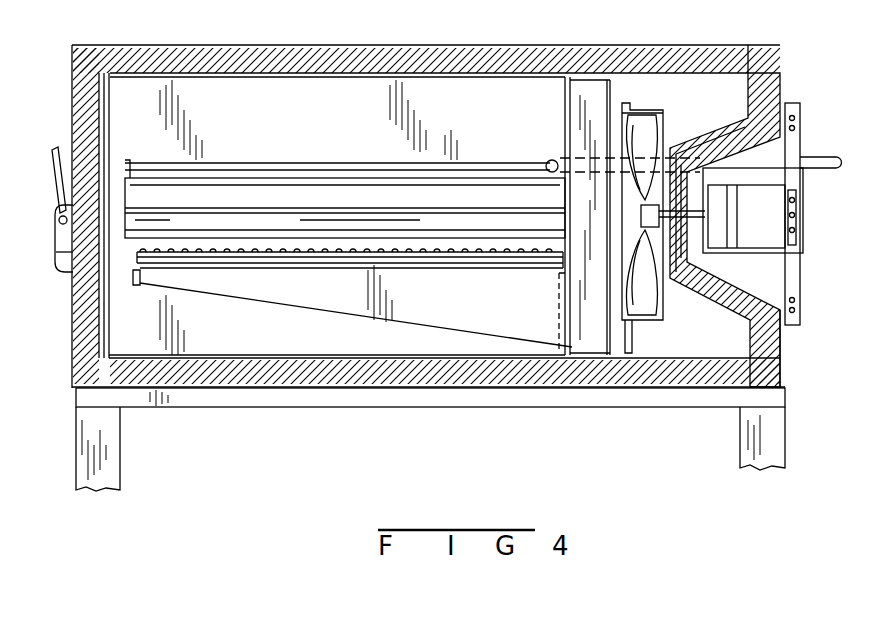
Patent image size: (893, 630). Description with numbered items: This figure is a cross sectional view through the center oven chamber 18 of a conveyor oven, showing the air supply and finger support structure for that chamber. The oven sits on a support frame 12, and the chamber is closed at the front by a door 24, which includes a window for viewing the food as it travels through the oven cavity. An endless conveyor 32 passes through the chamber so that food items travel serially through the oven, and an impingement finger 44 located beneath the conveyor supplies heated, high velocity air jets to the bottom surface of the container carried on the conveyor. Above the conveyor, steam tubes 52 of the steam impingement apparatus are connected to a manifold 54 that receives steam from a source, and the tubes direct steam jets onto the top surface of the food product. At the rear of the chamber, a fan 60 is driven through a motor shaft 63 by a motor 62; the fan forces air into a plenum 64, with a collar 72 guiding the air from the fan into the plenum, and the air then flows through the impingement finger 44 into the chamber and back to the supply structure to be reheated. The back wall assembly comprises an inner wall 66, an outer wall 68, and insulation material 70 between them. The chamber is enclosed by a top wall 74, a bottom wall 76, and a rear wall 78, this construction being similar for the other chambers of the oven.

The support frame 12 is at (113, 447).
The center oven chamber 18 is at (262, 105).
The door 24 is at (72, 103).
The endless conveyor 32 is at (246, 205).
The impingement finger 44 is at (455, 310).
The steam tubes 52 is at (302, 163).
The manifold 54 is at (548, 160).
The fan 60 is at (650, 135).
The motor 62 is at (768, 205).
The motor shaft 63 is at (655, 213).
The plenum 64 is at (584, 292).
The inner wall 66 is at (752, 333).
The outer wall 68 is at (778, 342).
The insulation material 70 is at (788, 327).
The collar 72 is at (652, 322).
The top wall 74 is at (346, 48).
The bottom wall 76 is at (305, 385).
The rear wall 78 is at (565, 108).